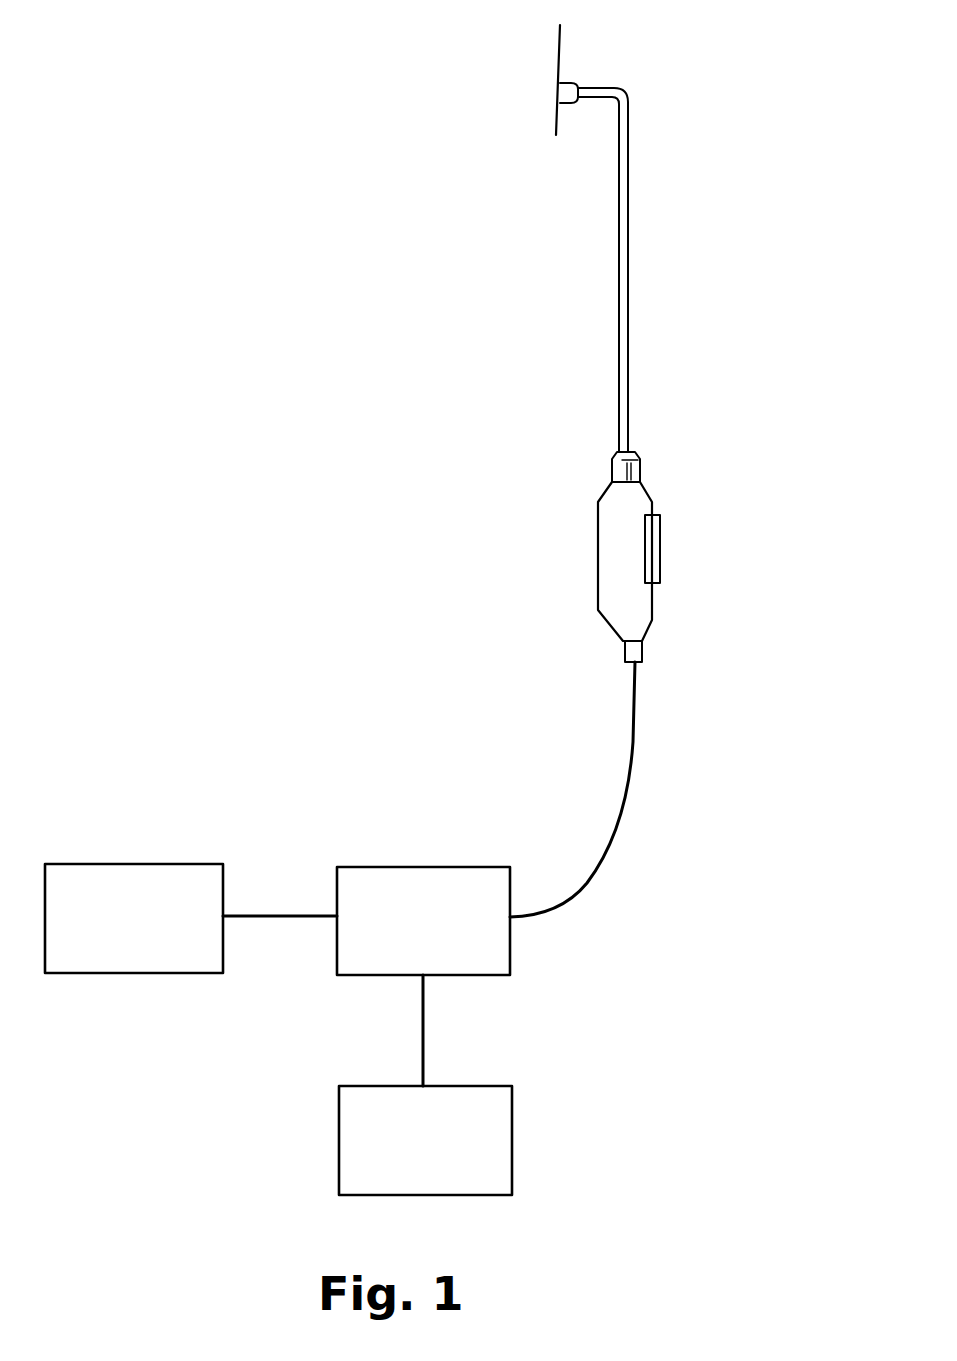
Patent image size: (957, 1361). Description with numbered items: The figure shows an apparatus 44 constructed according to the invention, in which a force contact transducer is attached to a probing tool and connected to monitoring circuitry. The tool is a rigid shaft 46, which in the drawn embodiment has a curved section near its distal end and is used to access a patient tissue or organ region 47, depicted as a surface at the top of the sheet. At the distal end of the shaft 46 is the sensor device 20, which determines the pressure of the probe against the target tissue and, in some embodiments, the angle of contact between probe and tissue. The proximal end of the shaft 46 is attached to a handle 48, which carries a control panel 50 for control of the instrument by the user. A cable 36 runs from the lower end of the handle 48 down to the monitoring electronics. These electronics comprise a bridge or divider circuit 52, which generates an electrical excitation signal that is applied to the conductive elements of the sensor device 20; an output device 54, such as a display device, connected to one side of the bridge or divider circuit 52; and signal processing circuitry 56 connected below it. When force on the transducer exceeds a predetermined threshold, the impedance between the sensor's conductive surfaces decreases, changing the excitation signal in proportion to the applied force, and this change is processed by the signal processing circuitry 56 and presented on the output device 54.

The sensor device 20 is at (571, 83).
The cable 36 is at (608, 847).
The apparatus 44 is at (725, 400).
The shaft 46 is at (628, 283).
The tissue or organ region 47 is at (560, 42).
The handle 48 is at (647, 612).
The control panel 50 is at (660, 528).
The bridge or divider circuit 52 is at (453, 867).
The output device 54 is at (187, 864).
The signal processing circuitry 56 is at (339, 1135).